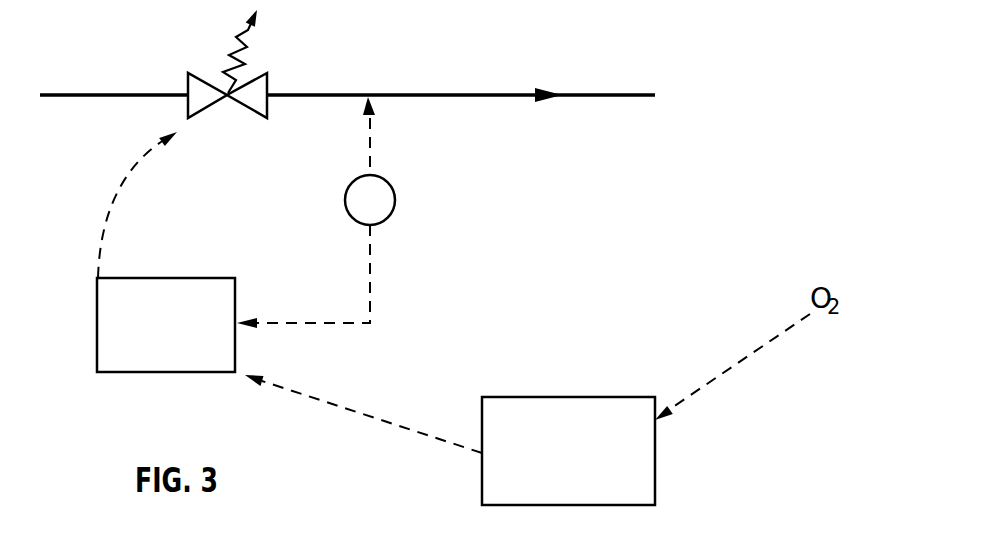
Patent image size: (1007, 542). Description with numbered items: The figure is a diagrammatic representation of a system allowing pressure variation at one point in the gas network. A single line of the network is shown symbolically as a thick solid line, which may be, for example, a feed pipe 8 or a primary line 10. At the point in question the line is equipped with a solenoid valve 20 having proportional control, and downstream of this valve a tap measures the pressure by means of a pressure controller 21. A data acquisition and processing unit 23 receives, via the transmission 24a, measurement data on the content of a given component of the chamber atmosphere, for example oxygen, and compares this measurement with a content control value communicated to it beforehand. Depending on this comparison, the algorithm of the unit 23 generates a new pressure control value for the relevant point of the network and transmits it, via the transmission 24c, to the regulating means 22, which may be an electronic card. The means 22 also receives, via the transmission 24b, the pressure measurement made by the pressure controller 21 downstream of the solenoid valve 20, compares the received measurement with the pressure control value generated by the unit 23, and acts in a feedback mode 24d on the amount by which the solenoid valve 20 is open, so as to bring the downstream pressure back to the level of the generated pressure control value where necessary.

The feed pipe 8 is at (347, 67).
The primary line 10 is at (72, 93).
The solenoid valve 20 is at (207, 70).
The pressure controller 21 is at (345, 190).
The means 22 is at (152, 342).
The data acquisition and processing unit 23 is at (602, 465).
The measurement data reception 24a is at (720, 377).
The pressure measurement reception 24b is at (287, 322).
The pressure control value transmission 24c is at (393, 425).
The feedback action 24d is at (130, 176).